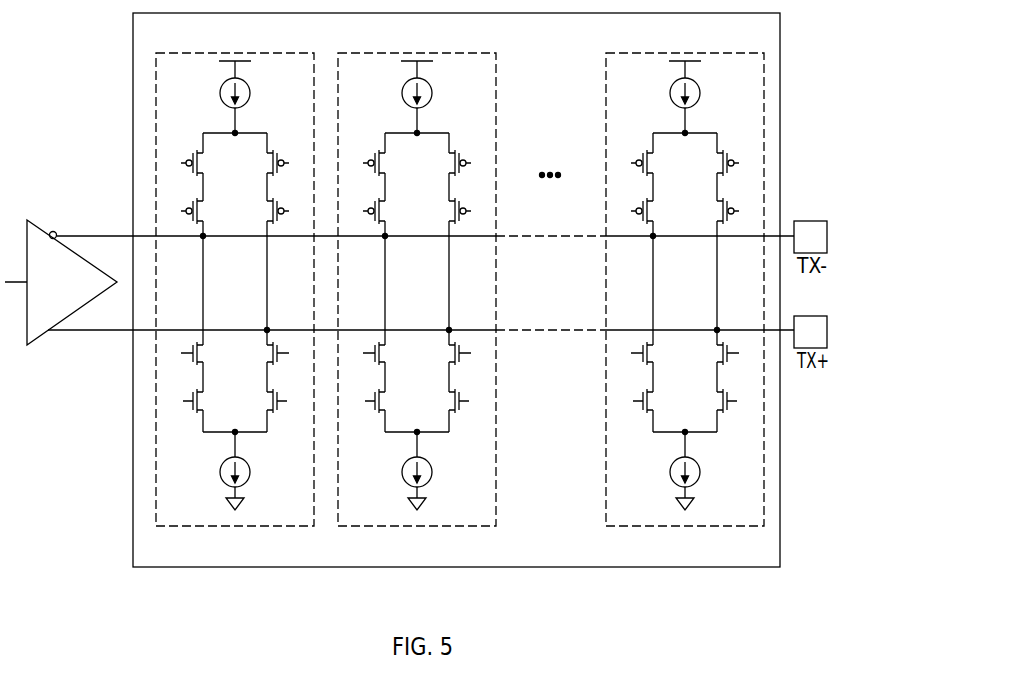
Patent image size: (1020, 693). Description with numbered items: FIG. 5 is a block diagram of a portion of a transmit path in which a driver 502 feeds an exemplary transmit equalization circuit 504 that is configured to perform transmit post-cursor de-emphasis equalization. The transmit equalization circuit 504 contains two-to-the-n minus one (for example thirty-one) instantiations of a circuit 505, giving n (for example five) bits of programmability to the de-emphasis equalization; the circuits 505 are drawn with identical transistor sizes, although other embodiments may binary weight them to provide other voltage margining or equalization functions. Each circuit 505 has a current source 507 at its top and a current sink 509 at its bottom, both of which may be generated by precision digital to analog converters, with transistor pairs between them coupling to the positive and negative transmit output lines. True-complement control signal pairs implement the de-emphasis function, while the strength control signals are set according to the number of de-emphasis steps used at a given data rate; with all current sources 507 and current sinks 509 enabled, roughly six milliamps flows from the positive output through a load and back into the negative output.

The driver 502 is at (72, 310).
The transmit equalization circuit 504 is at (171, 42).
The circuit 505 is at (197, 78).
The current source 507 is at (220, 94).
The current sink 509 is at (220, 473).